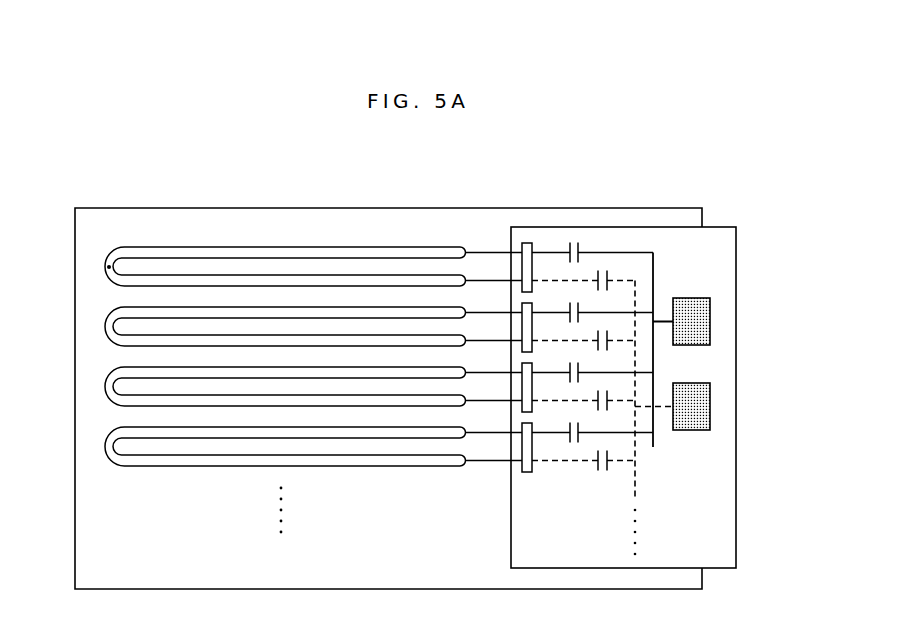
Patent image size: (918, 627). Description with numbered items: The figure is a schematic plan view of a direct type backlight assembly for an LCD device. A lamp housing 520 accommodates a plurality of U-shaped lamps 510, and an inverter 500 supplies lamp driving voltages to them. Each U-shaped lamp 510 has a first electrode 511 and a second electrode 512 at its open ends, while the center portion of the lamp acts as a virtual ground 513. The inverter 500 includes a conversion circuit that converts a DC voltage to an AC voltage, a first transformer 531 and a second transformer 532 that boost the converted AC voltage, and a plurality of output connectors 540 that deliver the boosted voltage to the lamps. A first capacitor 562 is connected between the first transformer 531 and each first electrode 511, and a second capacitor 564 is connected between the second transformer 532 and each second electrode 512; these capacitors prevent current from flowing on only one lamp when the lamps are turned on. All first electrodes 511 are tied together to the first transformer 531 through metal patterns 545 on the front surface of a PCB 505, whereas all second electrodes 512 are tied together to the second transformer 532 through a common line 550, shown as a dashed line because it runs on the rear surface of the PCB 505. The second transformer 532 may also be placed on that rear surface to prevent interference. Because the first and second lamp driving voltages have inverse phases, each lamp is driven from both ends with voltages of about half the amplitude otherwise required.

The inverter 500 is at (750, 521).
The PCB 505 is at (720, 482).
The U-shaped lamp 510 is at (265, 247).
The first electrode 511 is at (468, 248).
The second electrode 512 is at (463, 279).
The virtual ground 513 is at (106, 268).
The lamp housing 520 is at (204, 208).
The first transformer 531 is at (703, 298).
The second transformer 532 is at (703, 383).
The output connector 540 is at (528, 243).
The metal pattern 545 is at (655, 268).
The common line 550 is at (636, 468).
The first capacitor 562 is at (578, 247).
The second capacitor 564 is at (606, 272).